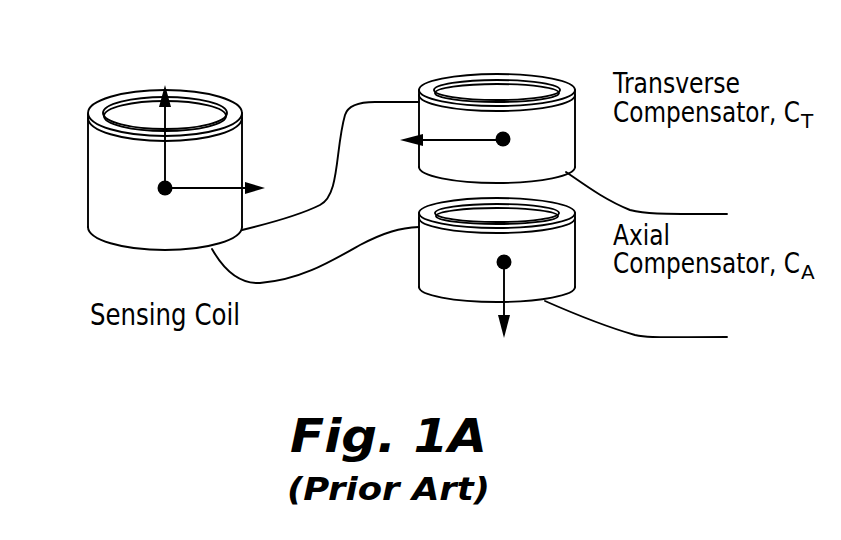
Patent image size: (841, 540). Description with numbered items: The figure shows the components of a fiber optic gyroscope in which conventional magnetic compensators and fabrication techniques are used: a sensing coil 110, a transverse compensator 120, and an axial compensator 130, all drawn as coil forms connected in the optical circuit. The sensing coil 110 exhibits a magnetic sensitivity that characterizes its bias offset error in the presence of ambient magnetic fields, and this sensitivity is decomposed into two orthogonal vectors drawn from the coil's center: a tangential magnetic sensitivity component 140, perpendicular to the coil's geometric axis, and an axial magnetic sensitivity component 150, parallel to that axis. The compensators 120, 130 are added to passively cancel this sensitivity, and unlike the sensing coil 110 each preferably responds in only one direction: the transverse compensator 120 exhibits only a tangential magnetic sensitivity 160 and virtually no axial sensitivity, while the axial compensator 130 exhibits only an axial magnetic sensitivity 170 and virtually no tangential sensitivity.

The sensing coil 110 is at (242, 150).
The transverse compensator 120 is at (498, 75).
The axial compensator 130 is at (419, 265).
The tangential magnetic sensitivity component 140 is at (215, 190).
The axial magnetic sensitivity component 150 is at (163, 162).
The tangential magnetic sensitivity 160 is at (438, 140).
The axial magnetic sensitivity 170 is at (502, 286).